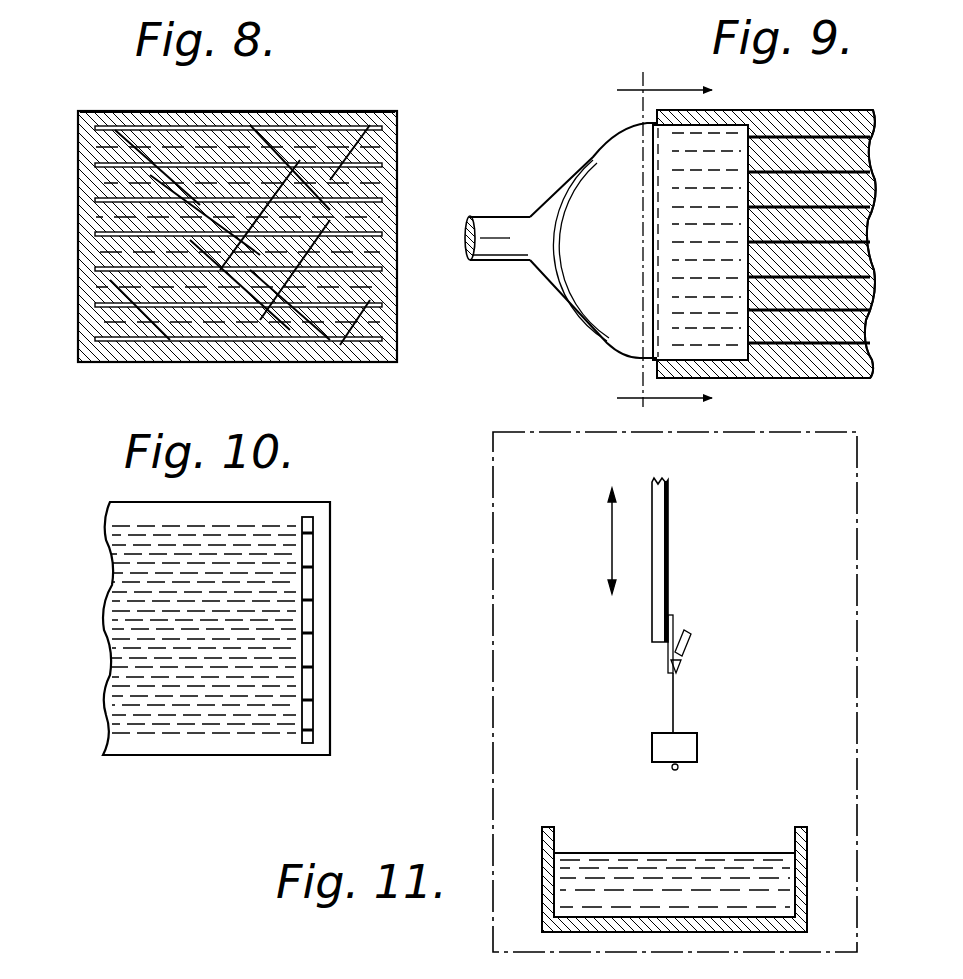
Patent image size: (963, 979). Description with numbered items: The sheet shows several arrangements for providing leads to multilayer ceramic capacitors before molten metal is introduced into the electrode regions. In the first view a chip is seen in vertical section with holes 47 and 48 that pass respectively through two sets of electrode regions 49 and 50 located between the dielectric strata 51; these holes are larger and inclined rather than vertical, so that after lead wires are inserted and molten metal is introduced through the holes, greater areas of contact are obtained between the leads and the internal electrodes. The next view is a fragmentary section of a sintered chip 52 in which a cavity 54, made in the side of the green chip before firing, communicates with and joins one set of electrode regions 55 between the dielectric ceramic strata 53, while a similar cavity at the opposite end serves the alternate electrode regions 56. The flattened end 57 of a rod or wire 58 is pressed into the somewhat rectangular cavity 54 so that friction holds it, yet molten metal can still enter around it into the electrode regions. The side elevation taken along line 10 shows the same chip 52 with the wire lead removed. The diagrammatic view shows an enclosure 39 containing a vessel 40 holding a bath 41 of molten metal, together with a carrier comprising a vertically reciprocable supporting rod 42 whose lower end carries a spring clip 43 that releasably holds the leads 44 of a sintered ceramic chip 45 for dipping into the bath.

In FIG. 9, the section line 10 is at (647, 232).
In FIG. 11, the enclosure 39 is at (497, 450).
In FIG. 11, the vessel 40 is at (800, 880).
In FIG. 11, the bath 41 is at (583, 868).
In FIG. 11, the supporting rod 42 is at (663, 500).
In FIG. 11, the spring clip 43 is at (690, 645).
In FIG. 11, the leads 44 is at (670, 703).
In FIG. 11, the sintered ceramic matrix or chip 45 is at (687, 750).
In FIG. 8, the hole 47 is at (122, 118).
In FIG. 8, the hole 48 is at (347, 112).
In FIG. 8, the electrode regions 49 is at (96, 134).
In FIG. 8, the electrode regions 50 is at (414, 172).
In FIG. 8, the dielectric strata 51 is at (388, 136).
In FIG. 9, the sintered chip 52 is at (872, 365).
In FIG. 10, the sintered chip 52 is at (196, 765).
In FIG. 9, the dielectric ceramic strata 53 is at (870, 146).
In FIG. 10, the dielectric ceramic strata 53 is at (118, 553).
In FIG. 9, the cavity 54 is at (690, 341).
In FIG. 10, the cavity 54 is at (310, 580).
In FIG. 9, the electrode regions 55 is at (810, 175).
In FIG. 10, the electrode regions 55 is at (305, 598).
In FIG. 9, the alternate electrode regions 56 is at (872, 215).
In FIG. 10, the alternate electrode regions 56 is at (118, 617).
In FIG. 9, the flattened end 57 is at (622, 158).
In FIG. 9, the rod or wire 58 is at (500, 217).